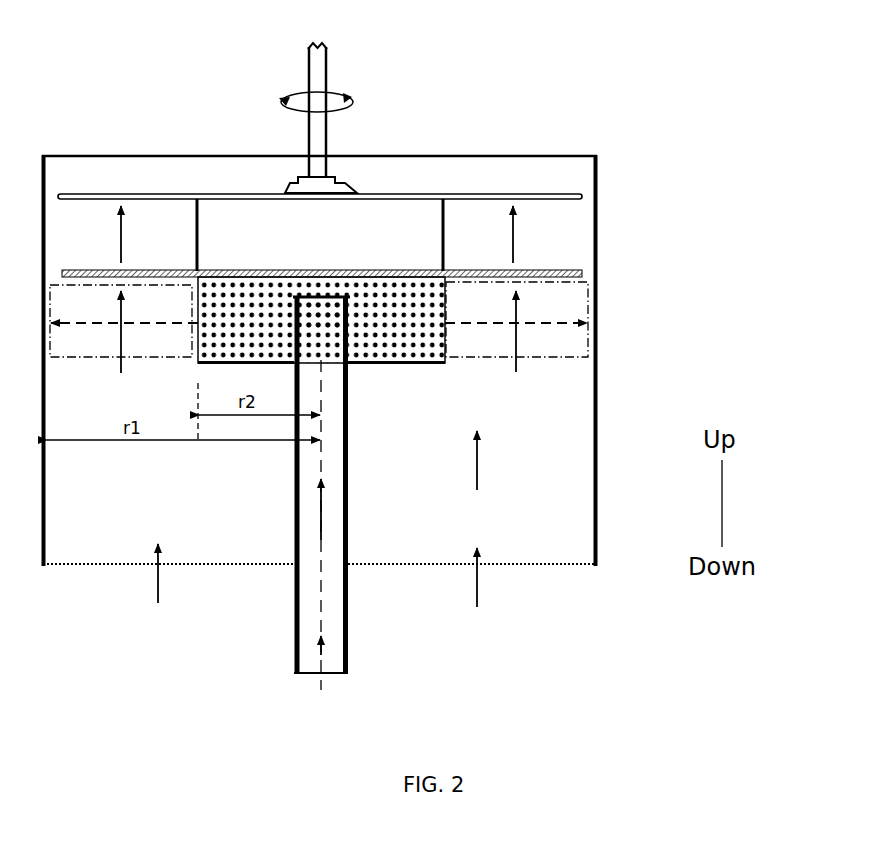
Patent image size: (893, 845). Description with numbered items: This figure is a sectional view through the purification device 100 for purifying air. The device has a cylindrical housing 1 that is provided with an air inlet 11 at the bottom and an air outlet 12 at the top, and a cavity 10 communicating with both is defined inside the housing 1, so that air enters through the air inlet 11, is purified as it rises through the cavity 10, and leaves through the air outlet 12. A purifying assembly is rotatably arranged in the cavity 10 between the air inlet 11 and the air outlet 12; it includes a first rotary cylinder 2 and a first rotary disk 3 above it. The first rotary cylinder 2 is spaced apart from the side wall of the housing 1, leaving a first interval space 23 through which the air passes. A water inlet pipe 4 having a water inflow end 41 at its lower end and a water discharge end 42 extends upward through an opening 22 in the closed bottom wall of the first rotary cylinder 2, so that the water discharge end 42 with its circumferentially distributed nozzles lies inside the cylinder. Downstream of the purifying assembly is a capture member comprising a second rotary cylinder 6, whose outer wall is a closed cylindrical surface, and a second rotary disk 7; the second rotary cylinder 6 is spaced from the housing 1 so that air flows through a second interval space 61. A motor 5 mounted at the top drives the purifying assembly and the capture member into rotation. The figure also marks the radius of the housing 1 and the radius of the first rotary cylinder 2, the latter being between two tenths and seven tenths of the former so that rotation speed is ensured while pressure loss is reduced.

The purification device 100 is at (149, 38).
The housing 1 is at (598, 497).
The cavity 10 is at (88, 475).
The air inlet 11 is at (502, 557).
The air outlet 12 is at (403, 165).
The first rotary cylinder 2 is at (403, 362).
The opening 22 is at (325, 333).
The first interval space 23 is at (543, 333).
The first rotary disk 3 is at (545, 270).
The water inlet pipe 4 is at (350, 633).
The water inflow end 41 is at (338, 677).
The water discharge end 42 is at (410, 368).
The motor 5 is at (328, 130).
The second rotary cylinder 6 is at (447, 233).
The second interval space 61 is at (147, 242).
The second rotary disk 7 is at (535, 192).